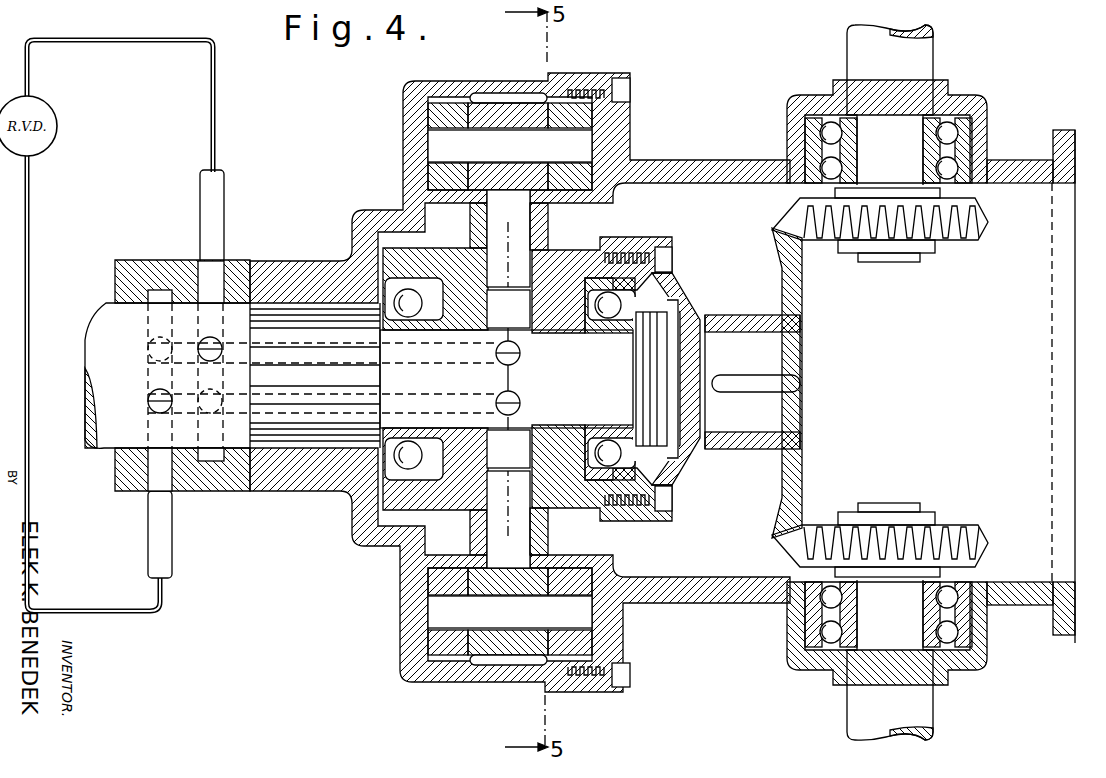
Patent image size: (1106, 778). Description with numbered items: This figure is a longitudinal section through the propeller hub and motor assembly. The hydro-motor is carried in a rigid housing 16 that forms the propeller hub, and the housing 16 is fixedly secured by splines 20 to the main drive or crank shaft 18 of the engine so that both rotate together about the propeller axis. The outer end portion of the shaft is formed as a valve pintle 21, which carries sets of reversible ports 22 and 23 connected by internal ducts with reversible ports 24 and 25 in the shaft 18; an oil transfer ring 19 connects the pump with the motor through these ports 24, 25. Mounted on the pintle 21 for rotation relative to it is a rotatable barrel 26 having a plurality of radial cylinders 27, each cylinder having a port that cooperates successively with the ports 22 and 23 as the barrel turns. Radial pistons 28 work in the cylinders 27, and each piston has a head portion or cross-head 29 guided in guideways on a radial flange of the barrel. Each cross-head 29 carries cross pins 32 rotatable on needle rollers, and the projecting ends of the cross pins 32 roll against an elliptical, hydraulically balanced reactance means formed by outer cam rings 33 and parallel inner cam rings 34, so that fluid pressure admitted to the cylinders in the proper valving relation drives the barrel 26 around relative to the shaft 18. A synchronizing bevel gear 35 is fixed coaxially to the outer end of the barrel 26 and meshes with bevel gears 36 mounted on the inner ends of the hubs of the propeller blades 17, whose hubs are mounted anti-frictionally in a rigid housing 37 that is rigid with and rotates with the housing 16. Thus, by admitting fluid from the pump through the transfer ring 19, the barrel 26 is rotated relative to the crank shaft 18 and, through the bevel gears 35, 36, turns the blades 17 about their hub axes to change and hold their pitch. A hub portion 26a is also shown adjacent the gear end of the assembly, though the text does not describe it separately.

The housing 16 is at (452, 81).
The propeller blades 17 is at (933, 46).
The main drive or crank shaft 18 is at (93, 318).
The oil transfer ring 19 is at (160, 261).
The splines 20 is at (300, 492).
The valve pintle 21 is at (529, 379).
The reversible port 22 is at (520, 353).
The reversible port 23 is at (520, 403).
The reversible port 24 is at (222, 348).
The reversible port 25 is at (148, 349).
The rotatable barrel 26 is at (556, 256).
The hub 26a is at (803, 360).
The radial cylinder 27 is at (456, 379).
The radial piston 28 is at (508, 379).
The head portion (cross-head) 29 is at (492, 656).
The cross pins 32 is at (510, 379).
The outer cam rings 33 is at (430, 116).
The inner cam rings 34 is at (440, 176).
The synchronizing bevel gear 35 is at (803, 303).
The bevel gears 36 is at (978, 240).
The housing 37 is at (983, 112).